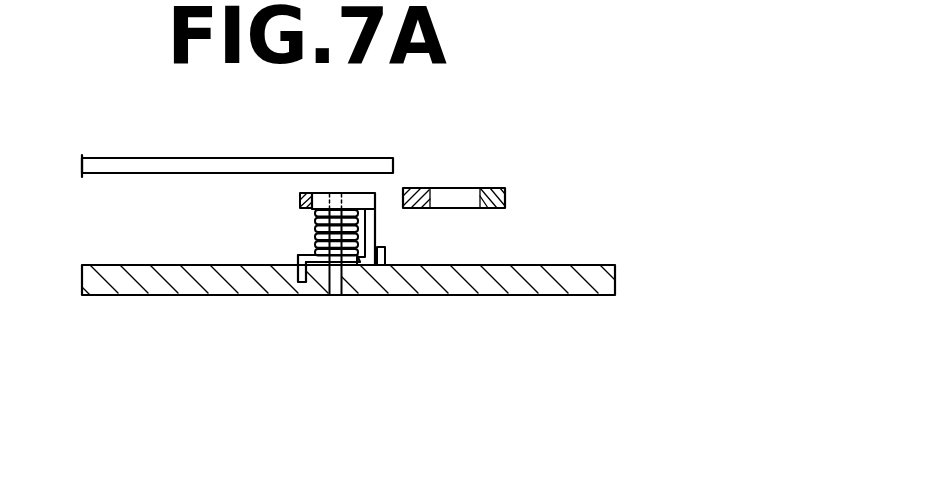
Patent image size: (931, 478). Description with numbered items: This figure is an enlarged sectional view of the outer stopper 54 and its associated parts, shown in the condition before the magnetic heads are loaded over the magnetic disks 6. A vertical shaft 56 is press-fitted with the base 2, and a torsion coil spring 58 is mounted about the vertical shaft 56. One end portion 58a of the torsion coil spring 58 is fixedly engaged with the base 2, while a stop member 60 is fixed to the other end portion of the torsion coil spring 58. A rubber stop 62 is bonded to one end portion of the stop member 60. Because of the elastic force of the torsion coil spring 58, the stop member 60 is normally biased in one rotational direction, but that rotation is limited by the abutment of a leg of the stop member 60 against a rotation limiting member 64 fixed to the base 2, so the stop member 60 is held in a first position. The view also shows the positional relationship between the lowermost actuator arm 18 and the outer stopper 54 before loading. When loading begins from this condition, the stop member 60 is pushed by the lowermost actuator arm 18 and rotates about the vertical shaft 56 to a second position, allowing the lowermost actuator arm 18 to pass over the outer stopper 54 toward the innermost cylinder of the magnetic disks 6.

The base 2 is at (590, 265).
The magnetic disk 6 is at (150, 160).
The lowermost actuator arm 18 is at (495, 188).
The outer stopper 54 is at (296, 232).
The vertical shaft 56 is at (337, 296).
The torsion coil spring 58 is at (366, 268).
The end portion of torsion coil spring 58a is at (302, 281).
The stop member 60 is at (360, 193).
The rubber stop 62 is at (300, 193).
The rotation limiting member 64 is at (386, 258).